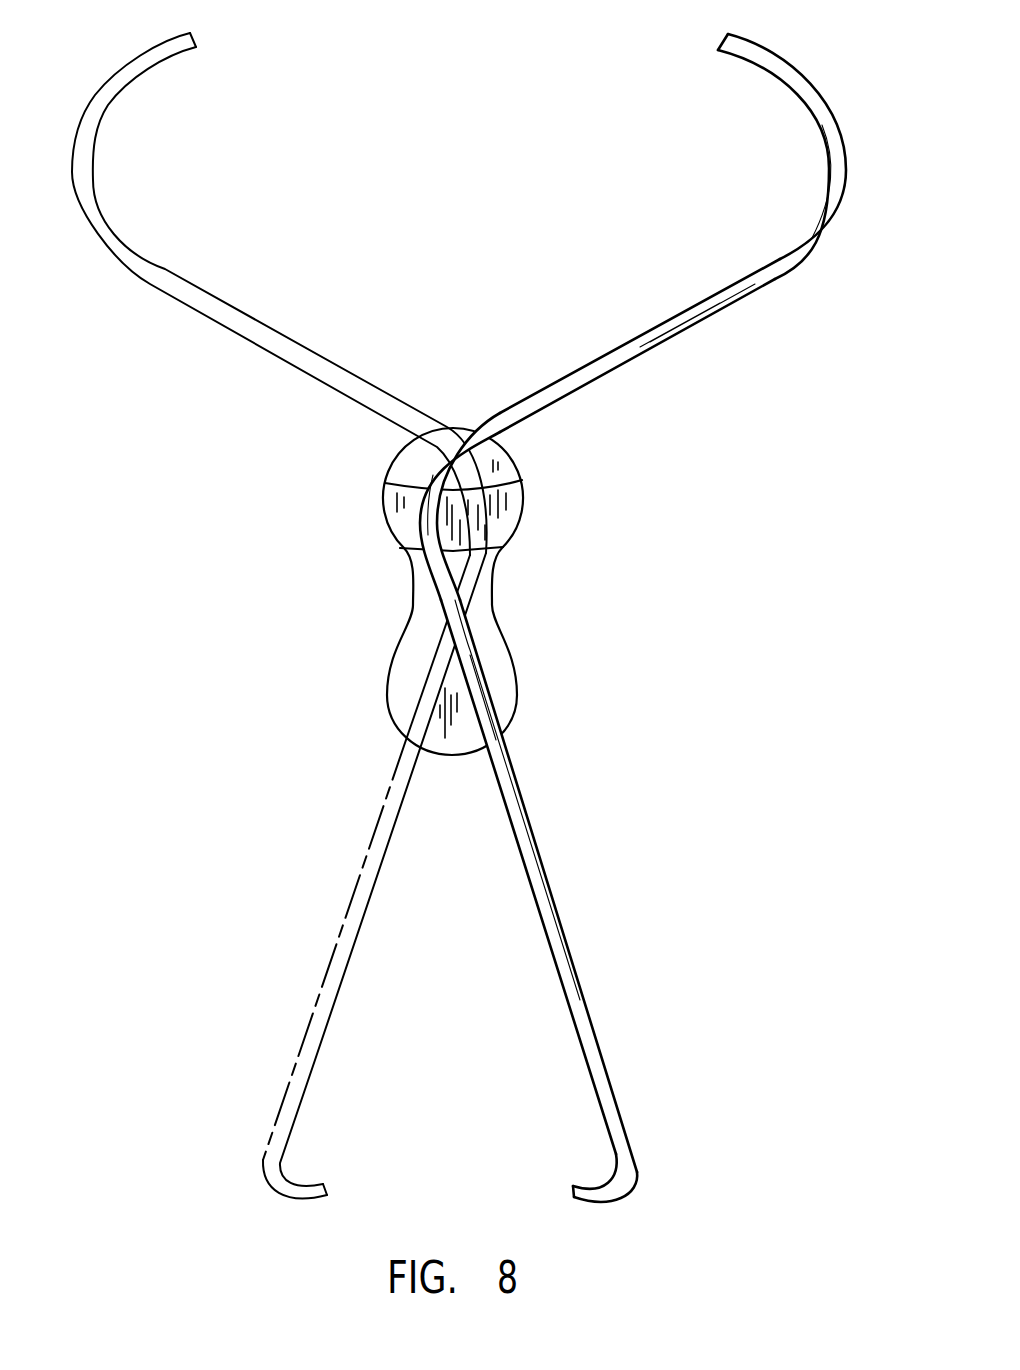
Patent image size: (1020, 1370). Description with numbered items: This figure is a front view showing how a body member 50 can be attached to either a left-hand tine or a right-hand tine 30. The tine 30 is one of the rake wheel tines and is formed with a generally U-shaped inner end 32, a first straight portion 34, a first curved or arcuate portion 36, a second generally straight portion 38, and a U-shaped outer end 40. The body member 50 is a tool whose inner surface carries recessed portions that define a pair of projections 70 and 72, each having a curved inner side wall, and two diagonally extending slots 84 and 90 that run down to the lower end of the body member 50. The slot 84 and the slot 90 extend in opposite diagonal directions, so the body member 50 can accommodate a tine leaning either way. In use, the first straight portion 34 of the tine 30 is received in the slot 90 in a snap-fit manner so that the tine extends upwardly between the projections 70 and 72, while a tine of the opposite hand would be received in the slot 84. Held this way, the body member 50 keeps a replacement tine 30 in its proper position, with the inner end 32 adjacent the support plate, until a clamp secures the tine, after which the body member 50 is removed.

The tine 30 is at (608, 360).
The U-shaped inner end 32 is at (592, 1187).
The first straight portion 34 is at (565, 955).
The first curved portion 36 is at (432, 510).
The second generally straight portion 38 is at (740, 298).
The U-shaped outer end 40 is at (832, 147).
The body member 50 is at (517, 600).
The projection 70 is at (403, 468).
The projection 72 is at (507, 468).
The slot 84 is at (430, 700).
The slot 90 is at (492, 702).